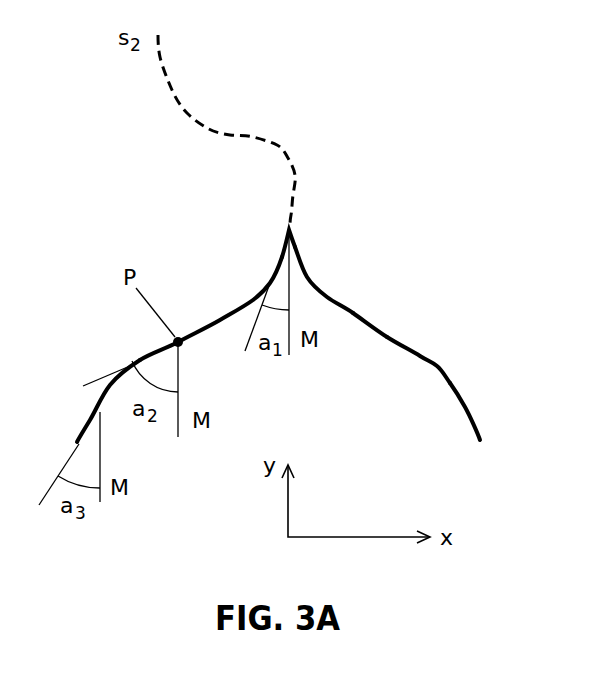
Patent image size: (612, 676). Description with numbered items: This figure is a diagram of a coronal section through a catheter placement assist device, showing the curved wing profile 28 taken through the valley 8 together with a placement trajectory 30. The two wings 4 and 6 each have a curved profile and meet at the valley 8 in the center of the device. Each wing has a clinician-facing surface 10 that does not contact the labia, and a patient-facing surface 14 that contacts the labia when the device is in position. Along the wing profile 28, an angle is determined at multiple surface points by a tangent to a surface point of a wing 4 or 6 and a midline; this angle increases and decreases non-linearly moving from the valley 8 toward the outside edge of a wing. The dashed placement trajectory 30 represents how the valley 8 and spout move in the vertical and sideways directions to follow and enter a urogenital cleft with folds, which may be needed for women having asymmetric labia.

The wing 4 is at (80, 428).
The wing 6 is at (437, 363).
The valley 8 is at (297, 233).
The clinician-facing surface 10 is at (397, 355).
The patient-facing surface 14 is at (366, 322).
The curved wing profile 28 is at (475, 412).
The placement trajectory 30 is at (228, 135).